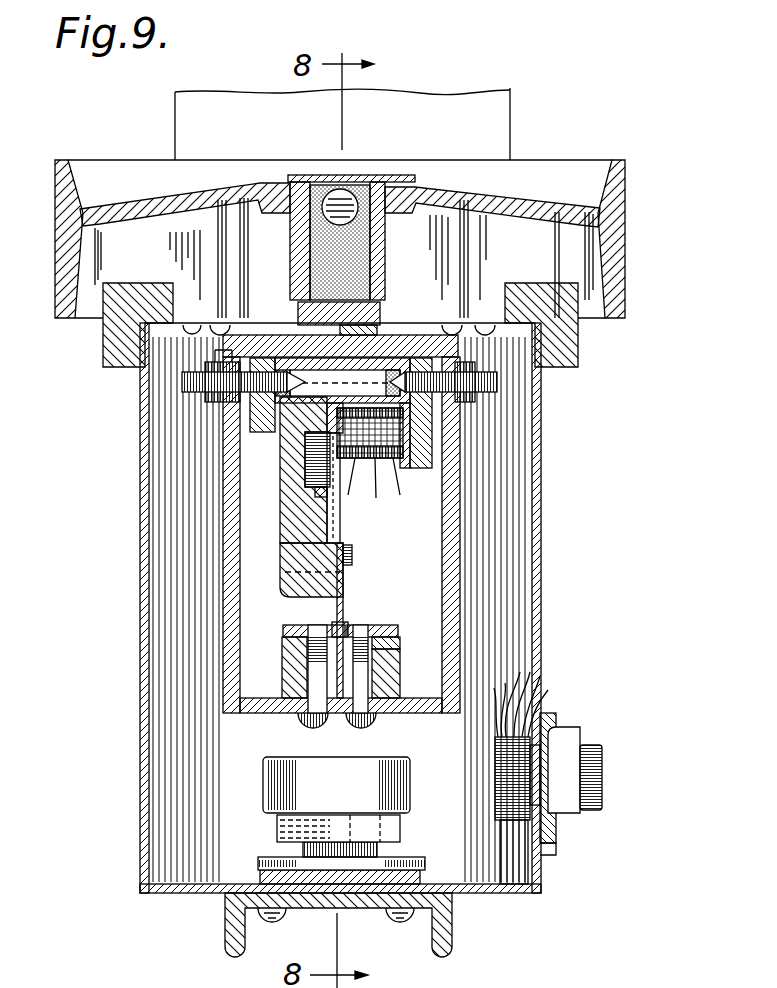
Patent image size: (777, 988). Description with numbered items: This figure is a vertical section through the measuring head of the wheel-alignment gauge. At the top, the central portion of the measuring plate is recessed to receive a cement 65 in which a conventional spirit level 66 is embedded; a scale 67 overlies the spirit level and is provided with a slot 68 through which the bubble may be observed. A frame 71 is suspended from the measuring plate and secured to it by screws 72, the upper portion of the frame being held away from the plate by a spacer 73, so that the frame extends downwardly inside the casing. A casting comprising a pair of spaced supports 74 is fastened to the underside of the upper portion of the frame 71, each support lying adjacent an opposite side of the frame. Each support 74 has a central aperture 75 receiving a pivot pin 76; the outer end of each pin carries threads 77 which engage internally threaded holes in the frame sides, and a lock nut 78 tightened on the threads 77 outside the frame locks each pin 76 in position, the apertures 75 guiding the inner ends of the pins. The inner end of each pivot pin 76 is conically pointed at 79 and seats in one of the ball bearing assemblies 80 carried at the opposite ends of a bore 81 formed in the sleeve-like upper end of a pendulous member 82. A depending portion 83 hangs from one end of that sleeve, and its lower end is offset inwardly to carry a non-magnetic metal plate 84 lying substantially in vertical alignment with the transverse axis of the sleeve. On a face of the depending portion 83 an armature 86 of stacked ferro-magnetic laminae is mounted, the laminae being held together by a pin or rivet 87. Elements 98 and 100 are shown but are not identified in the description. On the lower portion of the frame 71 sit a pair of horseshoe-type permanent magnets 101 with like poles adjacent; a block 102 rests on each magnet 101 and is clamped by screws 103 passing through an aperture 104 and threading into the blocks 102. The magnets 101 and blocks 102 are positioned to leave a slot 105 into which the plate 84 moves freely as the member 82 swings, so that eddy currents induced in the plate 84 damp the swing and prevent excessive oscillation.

The cement 65 is at (372, 192).
The spirit level 66 is at (333, 200).
The scale 67 is at (281, 177).
The slot 68 is at (344, 176).
The frame 71 is at (458, 532).
The screws 72 is at (383, 295).
The spacer 73 is at (382, 323).
The supports 74 is at (258, 402).
The central aperture 75 is at (258, 397).
The pivot pin 76 is at (252, 392).
The threads 77 is at (198, 382).
The lock nut 78 is at (220, 358).
The conically pointed inner end 79 is at (340, 405).
The ball bearing assemblies 80 is at (390, 375).
The bore 81 is at (377, 470).
The pendulous member 82 is at (290, 504).
The depending portion 83 is at (284, 527).
The non-magnetic metal plate 84 is at (337, 611).
The armature 86 is at (327, 455).
The pin or rivet 87 is at (330, 492).
The threaded member 98 is at (305, 440).
The insulator 100 is at (428, 422).
The permanent magnets 101 is at (283, 671).
The block 102 is at (288, 625).
The screws 103 is at (312, 680).
The aperture 104 is at (397, 641).
The slot 105 is at (345, 627).